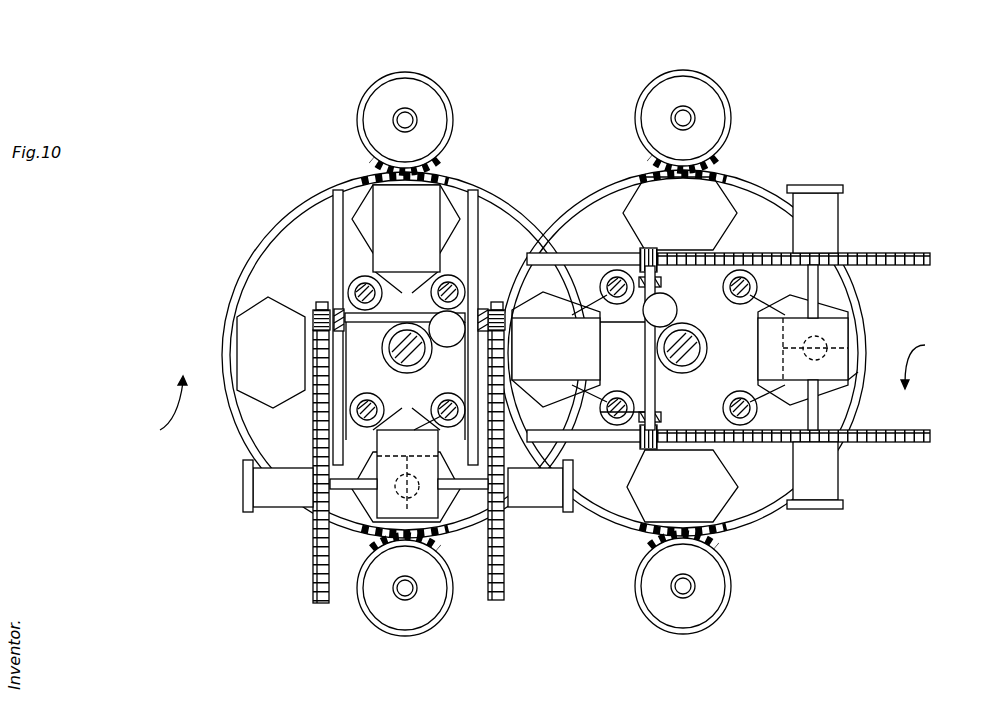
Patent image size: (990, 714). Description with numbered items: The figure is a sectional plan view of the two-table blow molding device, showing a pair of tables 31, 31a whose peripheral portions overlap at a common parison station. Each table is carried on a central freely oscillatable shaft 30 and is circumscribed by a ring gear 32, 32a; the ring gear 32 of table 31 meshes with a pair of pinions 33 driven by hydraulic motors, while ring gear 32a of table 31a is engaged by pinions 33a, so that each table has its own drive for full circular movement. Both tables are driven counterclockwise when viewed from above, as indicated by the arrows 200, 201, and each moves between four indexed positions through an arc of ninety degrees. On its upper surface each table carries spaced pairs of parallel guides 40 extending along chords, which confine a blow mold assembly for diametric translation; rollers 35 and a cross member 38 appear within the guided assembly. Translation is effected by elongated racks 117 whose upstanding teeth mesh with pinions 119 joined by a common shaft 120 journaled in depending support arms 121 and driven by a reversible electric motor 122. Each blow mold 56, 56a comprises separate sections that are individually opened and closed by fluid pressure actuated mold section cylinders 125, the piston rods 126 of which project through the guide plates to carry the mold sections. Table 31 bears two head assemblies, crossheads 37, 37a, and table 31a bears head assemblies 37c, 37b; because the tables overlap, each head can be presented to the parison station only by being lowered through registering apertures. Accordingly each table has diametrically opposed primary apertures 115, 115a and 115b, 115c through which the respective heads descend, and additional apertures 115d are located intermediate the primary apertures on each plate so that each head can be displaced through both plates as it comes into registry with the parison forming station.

The freely oscillatable shaft 30 is at (416, 357).
The table 31 is at (252, 287).
The table 31a is at (769, 489).
The ring gear 32 is at (278, 238).
The ring gear 32a is at (740, 532).
The pinions 33 is at (410, 74).
The pinions 33a is at (666, 73).
The guide rollers 35 is at (432, 294).
The crosshead 37 is at (416, 222).
The crosshead 37a is at (410, 431).
The head assembly 37b is at (758, 356).
The head assembly 37c is at (586, 359).
The cross frame bar 38 is at (345, 278).
The parallel guides 40 is at (333, 238).
The blow mold 56 is at (443, 520).
The blow mold 56a is at (852, 373).
The primary aperture 115 is at (358, 196).
The primary aperture 115a is at (368, 513).
The primary aperture 115b is at (838, 302).
The primary aperture 115c is at (532, 398).
The intermediate aperture 115d is at (238, 350).
The elongated rack 117 is at (320, 605).
The pinion 119 is at (330, 326).
The common shaft 120 is at (378, 335).
The depending support arm 121 is at (334, 310).
The reversible electric motor 122 is at (445, 345).
The mold section cylinder 125 is at (243, 498).
The piston rod 126 is at (330, 484).
The device rotation direction 200 is at (160, 430).
The rotation direction 201 is at (929, 360).